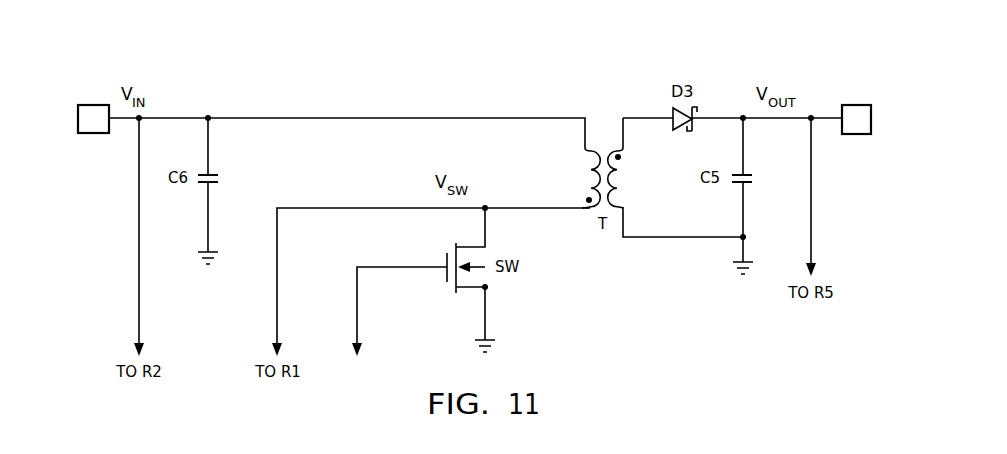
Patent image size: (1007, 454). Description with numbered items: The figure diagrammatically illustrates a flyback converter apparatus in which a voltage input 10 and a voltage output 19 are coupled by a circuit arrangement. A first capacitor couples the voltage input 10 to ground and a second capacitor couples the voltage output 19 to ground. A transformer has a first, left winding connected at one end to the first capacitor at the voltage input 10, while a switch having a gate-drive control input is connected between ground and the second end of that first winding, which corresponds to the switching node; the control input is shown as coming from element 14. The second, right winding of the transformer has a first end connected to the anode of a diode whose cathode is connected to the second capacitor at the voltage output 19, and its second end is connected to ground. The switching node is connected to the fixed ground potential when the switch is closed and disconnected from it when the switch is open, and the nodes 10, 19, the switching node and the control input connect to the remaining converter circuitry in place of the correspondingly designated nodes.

The voltage input 10 is at (97, 105).
The voltage output 19 is at (855, 105).
The controller providing LDRV gate drive signal 14 is at (384, 338).